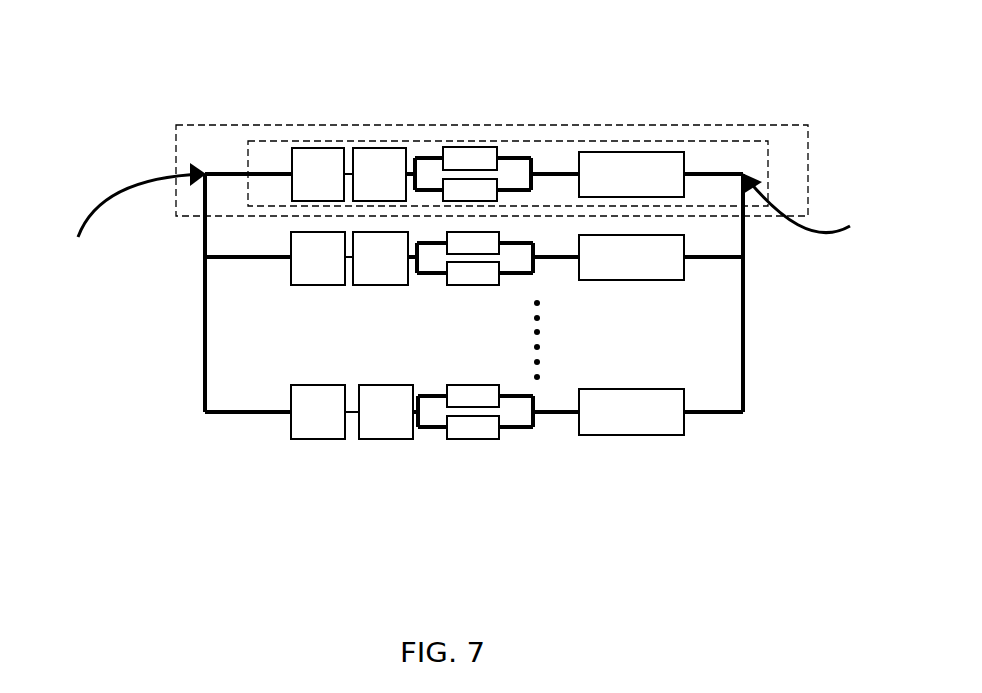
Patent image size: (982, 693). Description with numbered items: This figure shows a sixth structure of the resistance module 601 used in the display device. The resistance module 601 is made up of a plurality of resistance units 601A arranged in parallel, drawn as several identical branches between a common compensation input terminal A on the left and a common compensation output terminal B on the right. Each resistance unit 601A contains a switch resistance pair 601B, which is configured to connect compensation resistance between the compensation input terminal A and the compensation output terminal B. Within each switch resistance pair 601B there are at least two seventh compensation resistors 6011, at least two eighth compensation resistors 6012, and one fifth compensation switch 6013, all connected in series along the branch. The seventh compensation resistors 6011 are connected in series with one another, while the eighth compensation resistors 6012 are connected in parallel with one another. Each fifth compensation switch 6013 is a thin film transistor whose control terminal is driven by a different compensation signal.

The resistance module 601 is at (114, 86).
The resistance unit 601A is at (760, 125).
The switch resistance pair 601B is at (248, 141).
The seventh compensation resistor 6011 is at (292, 150).
The eighth compensation resistor 6012 is at (446, 150).
The fifth compensation switch 6013 is at (642, 151).
The compensation input terminal A is at (133, 216).
The compensation output terminal B is at (810, 205).